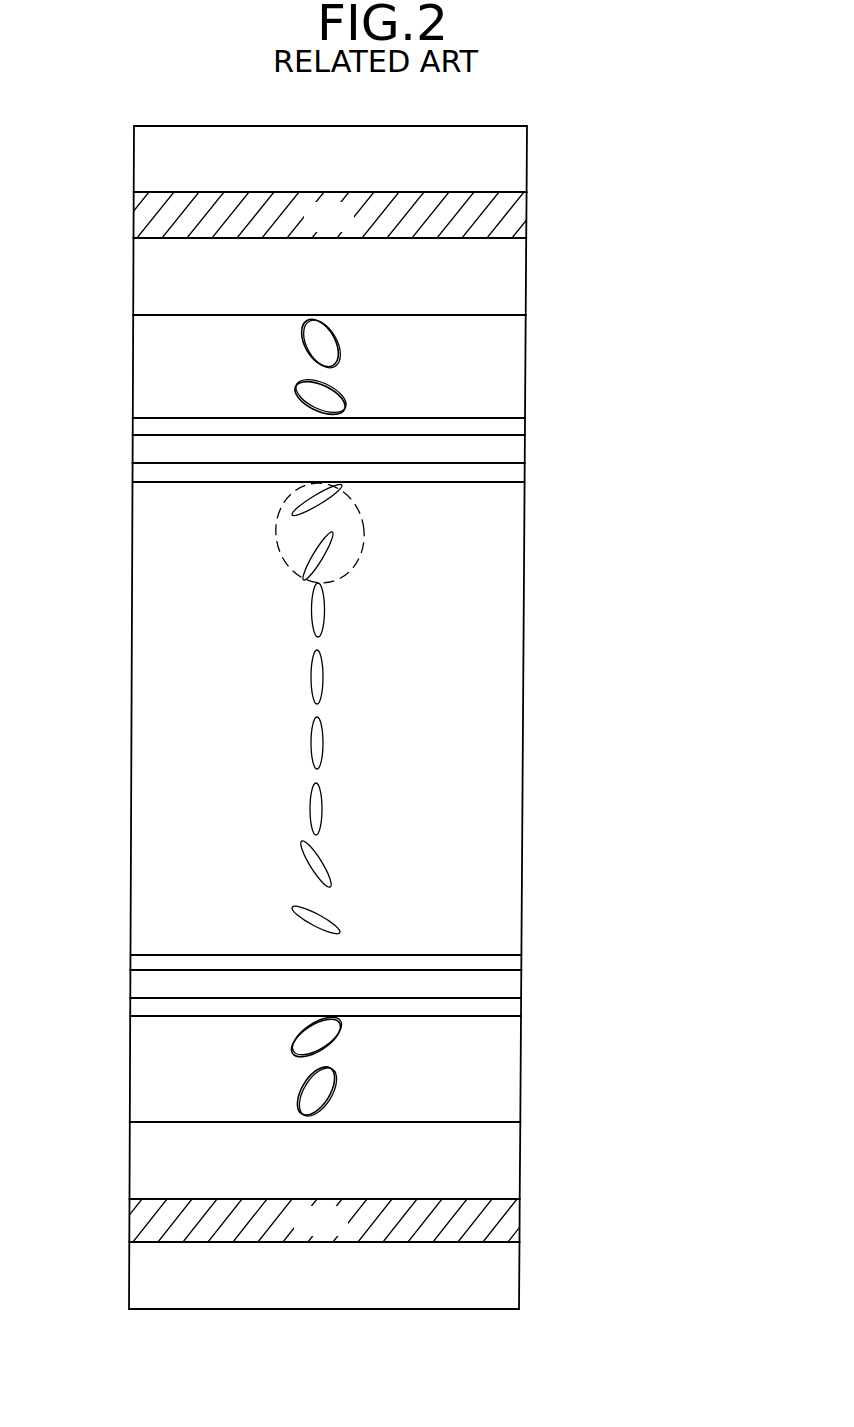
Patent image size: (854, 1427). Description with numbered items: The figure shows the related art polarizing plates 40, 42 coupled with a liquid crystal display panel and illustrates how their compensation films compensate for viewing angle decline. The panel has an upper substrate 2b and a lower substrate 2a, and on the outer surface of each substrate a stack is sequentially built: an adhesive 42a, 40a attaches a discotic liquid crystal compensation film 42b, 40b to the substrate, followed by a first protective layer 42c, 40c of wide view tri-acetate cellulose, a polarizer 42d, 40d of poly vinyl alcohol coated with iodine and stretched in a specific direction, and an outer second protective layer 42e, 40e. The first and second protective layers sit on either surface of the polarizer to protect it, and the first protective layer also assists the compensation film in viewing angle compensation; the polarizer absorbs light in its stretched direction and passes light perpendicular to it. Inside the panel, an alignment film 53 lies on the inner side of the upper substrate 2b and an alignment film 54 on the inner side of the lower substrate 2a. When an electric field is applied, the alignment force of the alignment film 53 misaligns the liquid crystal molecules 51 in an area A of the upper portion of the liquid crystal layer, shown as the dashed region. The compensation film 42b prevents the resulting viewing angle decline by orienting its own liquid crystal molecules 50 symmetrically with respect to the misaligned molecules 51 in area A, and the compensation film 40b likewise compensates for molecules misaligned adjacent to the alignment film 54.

The polarizing plate 42 is at (399, 285).
The second protective layer 42e is at (522, 160).
The polarizer 42d is at (522, 217).
The first protective layer 42c is at (522, 277).
The compensation film 42b is at (522, 368).
The adhesive 42a is at (374, 430).
The upper substrate 2b is at (522, 452).
The alignment film 53 is at (522, 472).
The liquid crystal molecules 50 is at (315, 400).
The liquid crystal molecules 51 is at (292, 512).
The area A is at (275, 548).
The alignment film 54 is at (520, 963).
The lower substrate 2a is at (520, 987).
The polarizing plate 40 is at (418, 1152).
The adhesive 40a is at (520, 1008).
The compensation film 40b is at (520, 1068).
The first protective layer 40c is at (520, 1158).
The polarizer 40d is at (520, 1220).
The second protective layer 40e is at (369, 1275).